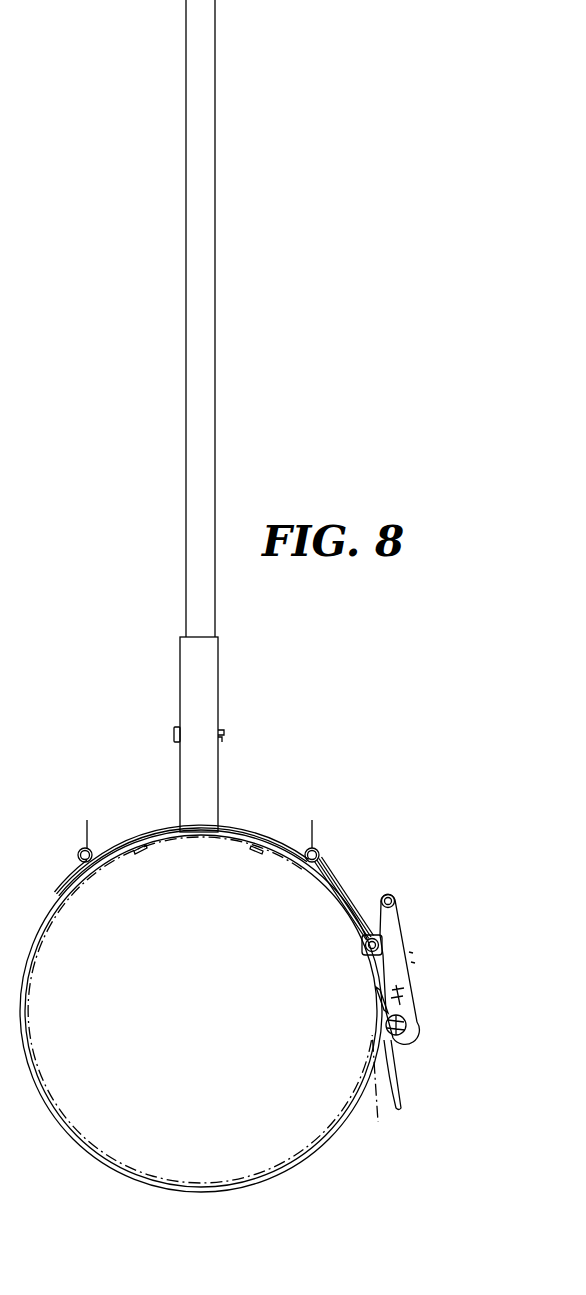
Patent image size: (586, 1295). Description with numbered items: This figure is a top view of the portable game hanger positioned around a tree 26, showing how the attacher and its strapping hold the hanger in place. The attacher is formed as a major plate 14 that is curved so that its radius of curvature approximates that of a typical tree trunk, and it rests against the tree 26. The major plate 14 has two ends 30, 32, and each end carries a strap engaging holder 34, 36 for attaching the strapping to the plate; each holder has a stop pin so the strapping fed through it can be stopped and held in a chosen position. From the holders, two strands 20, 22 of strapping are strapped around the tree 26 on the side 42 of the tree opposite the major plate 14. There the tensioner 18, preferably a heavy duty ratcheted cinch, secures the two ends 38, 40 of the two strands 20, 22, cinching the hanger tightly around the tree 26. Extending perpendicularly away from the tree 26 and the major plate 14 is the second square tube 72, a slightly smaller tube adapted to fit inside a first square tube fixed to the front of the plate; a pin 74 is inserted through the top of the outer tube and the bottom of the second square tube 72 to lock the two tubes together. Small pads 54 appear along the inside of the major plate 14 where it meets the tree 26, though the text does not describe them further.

The second square tube 72 is at (215, 357).
The pin 74 is at (175, 733).
The major plate 14 is at (244, 842).
The pad 54 is at (250, 853).
The strap engaging holder 36 is at (78, 852).
The end 32 is at (97, 855).
The strap engaging holder 34 is at (320, 852).
The end 30 is at (295, 857).
The strand 20 is at (338, 887).
The end 38 is at (358, 928).
The tensioner 18 is at (405, 927).
The end 40 is at (397, 1080).
The tree 26 is at (378, 1123).
The strand 22 is at (335, 1127).
The side 42 is at (306, 1157).